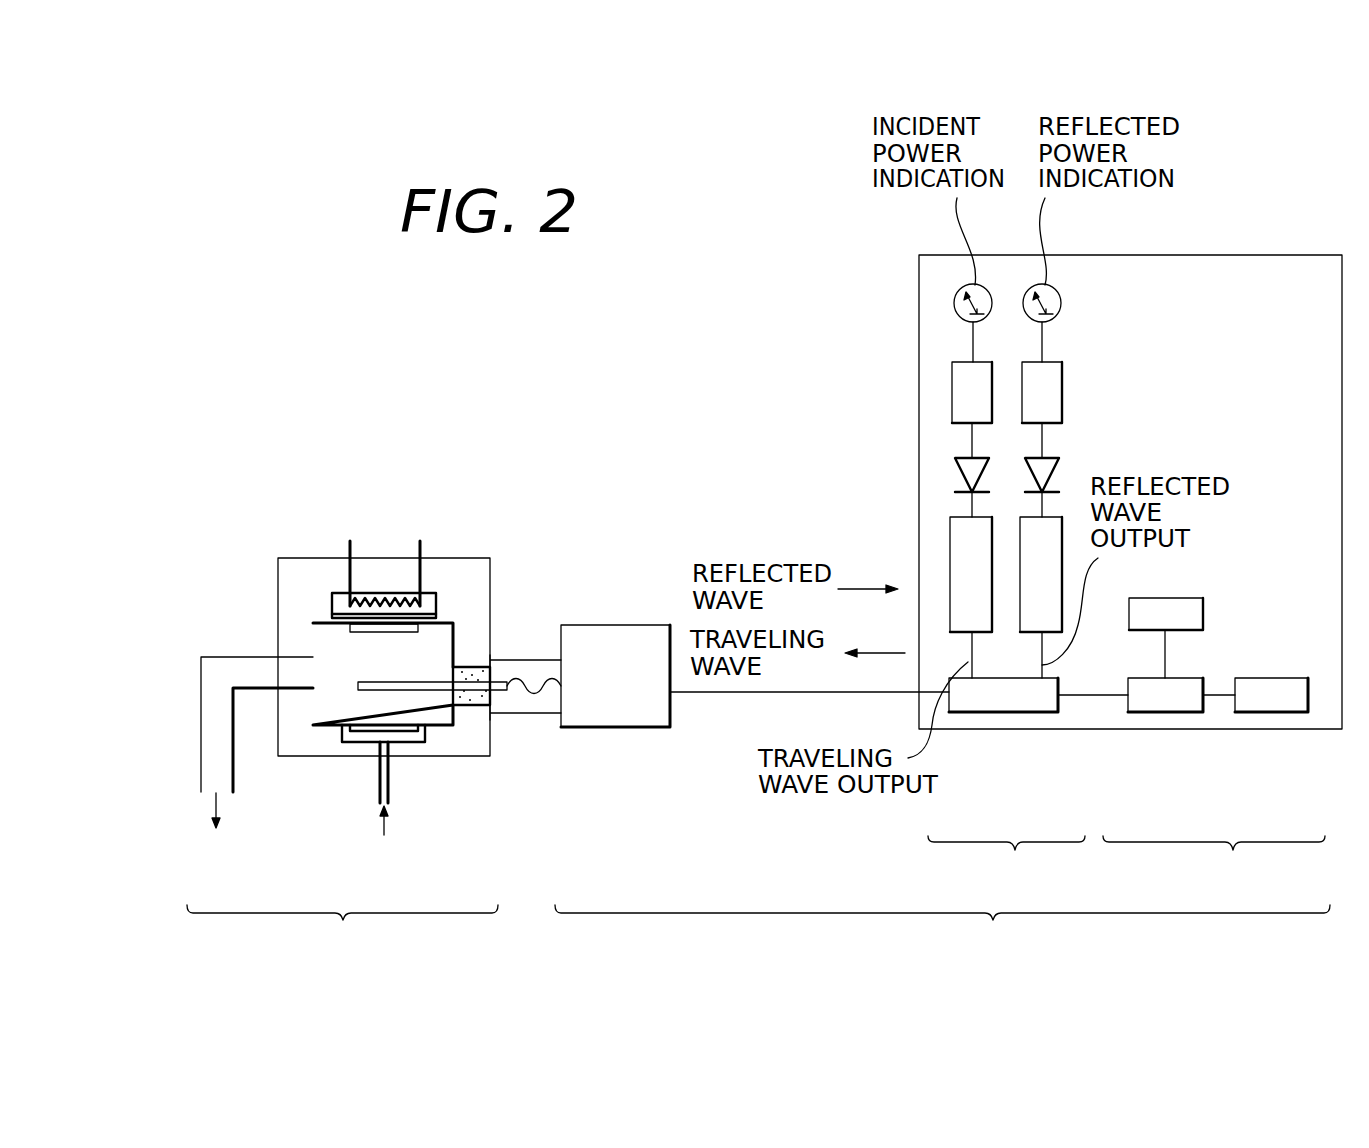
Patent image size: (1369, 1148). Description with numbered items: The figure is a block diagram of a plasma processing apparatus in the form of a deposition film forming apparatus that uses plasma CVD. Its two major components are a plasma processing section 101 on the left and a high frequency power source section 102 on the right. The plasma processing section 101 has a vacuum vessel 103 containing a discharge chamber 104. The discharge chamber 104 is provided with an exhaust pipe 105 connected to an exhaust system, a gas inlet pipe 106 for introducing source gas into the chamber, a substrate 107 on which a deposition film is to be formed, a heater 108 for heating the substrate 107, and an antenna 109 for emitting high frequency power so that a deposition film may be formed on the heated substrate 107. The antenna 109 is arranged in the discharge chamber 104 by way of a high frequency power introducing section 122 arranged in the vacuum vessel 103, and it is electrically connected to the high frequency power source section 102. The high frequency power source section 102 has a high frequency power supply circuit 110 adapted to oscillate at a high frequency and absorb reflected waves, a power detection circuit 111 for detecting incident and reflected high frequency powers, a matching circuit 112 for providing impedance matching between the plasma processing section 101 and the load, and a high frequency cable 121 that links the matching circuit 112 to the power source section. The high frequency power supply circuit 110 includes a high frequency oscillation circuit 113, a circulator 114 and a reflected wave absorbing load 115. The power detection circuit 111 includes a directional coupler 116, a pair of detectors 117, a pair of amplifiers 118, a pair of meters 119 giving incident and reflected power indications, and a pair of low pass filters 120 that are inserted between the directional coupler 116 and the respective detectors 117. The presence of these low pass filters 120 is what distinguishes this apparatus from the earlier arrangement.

The plasma processing section 101 is at (342, 931).
The high frequency power source section 102 is at (942, 931).
The vacuum vessel 103 is at (291, 558).
The discharge chamber 104 is at (455, 630).
The exhaust pipe 105 is at (201, 752).
The gas inlet pipe 106 is at (380, 791).
The substrate 107 is at (351, 636).
The heater 108 is at (433, 586).
The antenna 109 is at (358, 686).
The high frequency power supply circuit 110 is at (1214, 862).
The power detection circuit 111 is at (1006, 862).
The matching circuit 112 is at (623, 625).
The high frequency oscillation circuit 113 is at (1263, 712).
The circulator 114 is at (1172, 712).
The reflected wave absorbing load 115 is at (1187, 597).
The directional coupler 116 is at (998, 712).
The detectors 117 is at (956, 466).
The amplifiers 118 is at (952, 383).
The meters 119 is at (955, 308).
The low pass filters 120 is at (950, 523).
The high frequency cable 121 is at (730, 692).
The high frequency power introducing section 122 is at (472, 673).